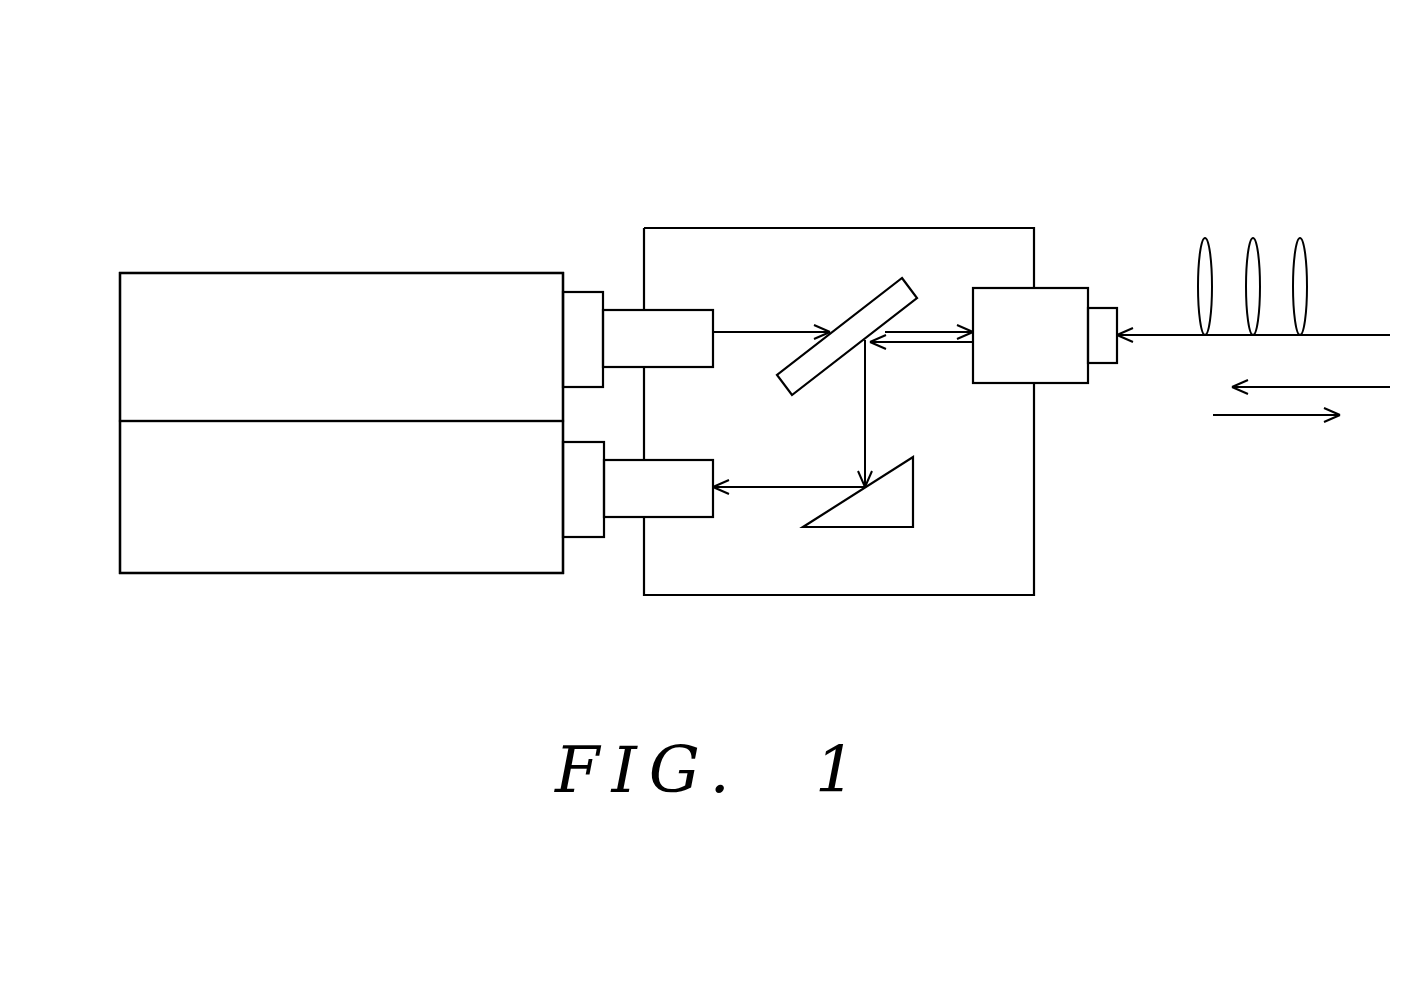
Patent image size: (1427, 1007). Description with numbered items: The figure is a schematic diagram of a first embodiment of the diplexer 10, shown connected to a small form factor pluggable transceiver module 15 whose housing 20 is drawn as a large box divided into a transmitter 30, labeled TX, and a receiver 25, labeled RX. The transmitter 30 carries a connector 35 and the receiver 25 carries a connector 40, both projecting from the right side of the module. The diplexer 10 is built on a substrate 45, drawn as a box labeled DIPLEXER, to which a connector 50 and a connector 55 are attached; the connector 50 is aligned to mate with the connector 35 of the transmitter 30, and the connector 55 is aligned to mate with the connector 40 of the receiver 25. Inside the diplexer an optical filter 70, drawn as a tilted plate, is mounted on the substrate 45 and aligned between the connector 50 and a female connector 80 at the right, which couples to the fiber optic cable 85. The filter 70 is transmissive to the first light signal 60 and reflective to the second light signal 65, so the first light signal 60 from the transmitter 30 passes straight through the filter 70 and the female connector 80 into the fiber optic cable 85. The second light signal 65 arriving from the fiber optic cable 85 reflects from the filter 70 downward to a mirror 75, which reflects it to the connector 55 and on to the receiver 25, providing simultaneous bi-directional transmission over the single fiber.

The diplexer 10 is at (740, 72).
The small form factor pluggable transceiver module 15 is at (323, 152).
The transceiver housing 20 is at (525, 573).
The receiver 25 is at (182, 553).
The transmitter 30 is at (182, 302).
The connector of the transmitter 35 is at (590, 312).
The connector of the receiver 40 is at (593, 520).
The substrate 45 is at (760, 228).
The connector 50 is at (630, 323).
The connector 55 is at (630, 500).
The light signal λ1 60 is at (737, 330).
The light signal λ2 65 is at (772, 490).
The optical filter 70 is at (882, 278).
The mirror 75 is at (838, 515).
The female connector 80 is at (1060, 383).
The fiber optic cable 85 is at (1308, 280).